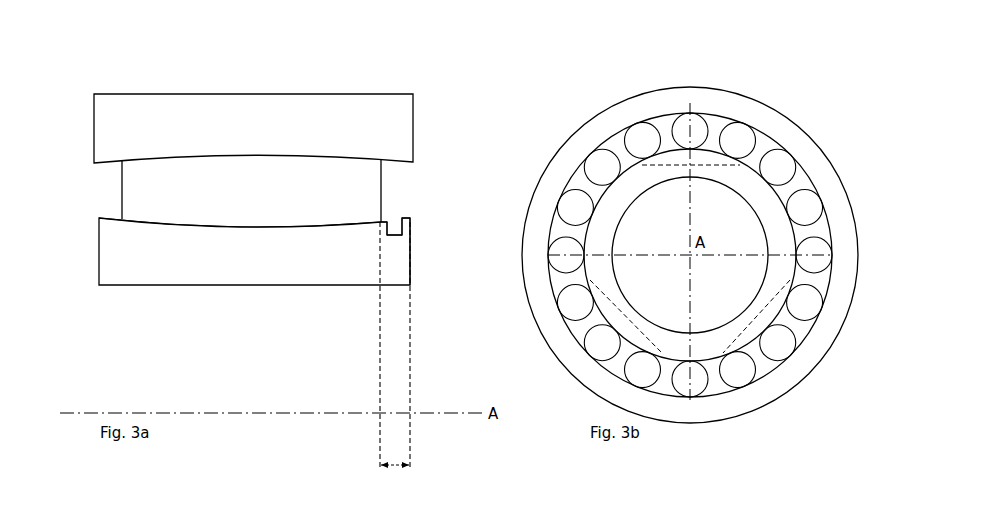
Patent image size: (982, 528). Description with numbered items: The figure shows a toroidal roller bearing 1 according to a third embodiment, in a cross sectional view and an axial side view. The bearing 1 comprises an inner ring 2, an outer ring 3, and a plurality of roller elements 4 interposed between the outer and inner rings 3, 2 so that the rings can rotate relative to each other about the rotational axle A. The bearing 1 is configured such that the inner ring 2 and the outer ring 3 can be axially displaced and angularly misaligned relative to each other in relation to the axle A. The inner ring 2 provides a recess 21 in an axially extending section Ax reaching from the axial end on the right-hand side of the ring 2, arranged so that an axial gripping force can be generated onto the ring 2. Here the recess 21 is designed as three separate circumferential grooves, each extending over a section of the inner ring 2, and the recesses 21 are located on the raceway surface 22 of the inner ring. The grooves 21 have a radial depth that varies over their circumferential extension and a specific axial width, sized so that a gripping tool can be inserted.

In FIG. 3A, the toroidal roller bearing 1 is at (80, 80).
In FIG. 3B, the toroidal roller bearing 1 is at (622, 86).
In FIG. 3A, the inner ring 2 is at (99, 257).
In FIG. 3B, the inner ring 2 is at (778, 195).
In FIG. 3A, the outer ring 3 is at (415, 115).
In FIG. 3B, the outer ring 3 is at (570, 135).
In FIG. 3A, the roller elements 4 is at (122, 192).
In FIG. 3B, the roller elements 4 is at (745, 125).
In FIG. 3A, the recess 21 is at (395, 237).
In FIG. 3B, the recess 21 is at (617, 312).
In FIG. 3A, the raceway surface 22 is at (272, 226).
In FIG. 3B, the raceway surface 22 is at (710, 360).